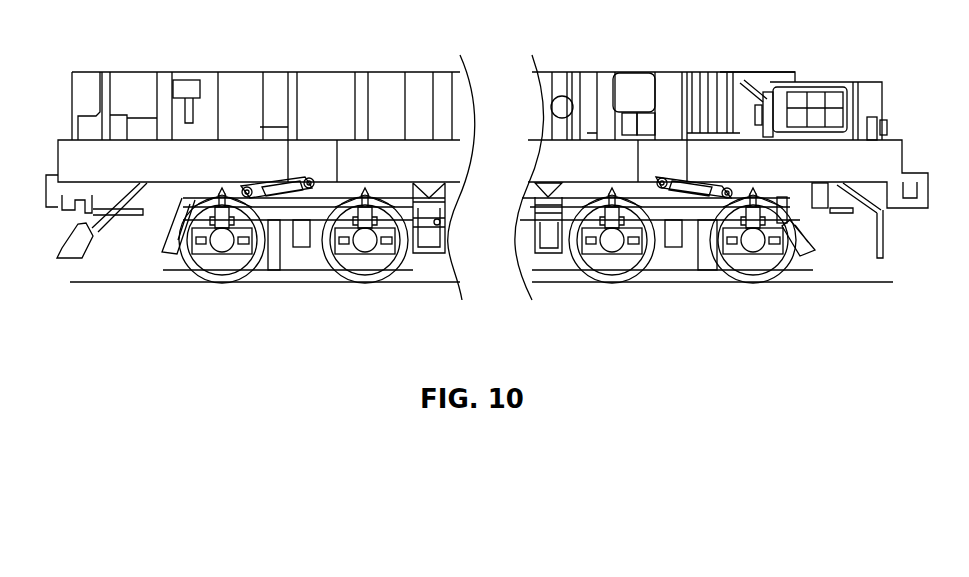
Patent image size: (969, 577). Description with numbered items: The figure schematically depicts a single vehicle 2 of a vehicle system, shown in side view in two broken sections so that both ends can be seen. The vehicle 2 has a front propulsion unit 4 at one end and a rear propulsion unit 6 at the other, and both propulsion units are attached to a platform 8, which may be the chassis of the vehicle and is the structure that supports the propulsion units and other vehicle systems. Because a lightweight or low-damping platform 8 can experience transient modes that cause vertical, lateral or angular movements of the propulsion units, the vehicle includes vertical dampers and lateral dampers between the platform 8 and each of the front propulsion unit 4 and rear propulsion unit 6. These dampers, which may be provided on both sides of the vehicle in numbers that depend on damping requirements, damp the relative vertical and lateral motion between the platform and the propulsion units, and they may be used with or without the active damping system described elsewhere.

The vehicle 2 is at (759, 56).
The front propulsion unit 4 is at (184, 334).
The rear propulsion unit 6 is at (732, 336).
The platform 8 is at (827, 183).